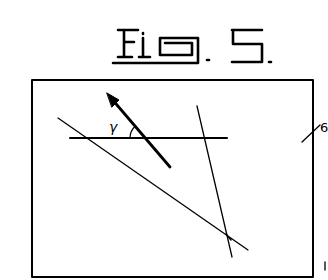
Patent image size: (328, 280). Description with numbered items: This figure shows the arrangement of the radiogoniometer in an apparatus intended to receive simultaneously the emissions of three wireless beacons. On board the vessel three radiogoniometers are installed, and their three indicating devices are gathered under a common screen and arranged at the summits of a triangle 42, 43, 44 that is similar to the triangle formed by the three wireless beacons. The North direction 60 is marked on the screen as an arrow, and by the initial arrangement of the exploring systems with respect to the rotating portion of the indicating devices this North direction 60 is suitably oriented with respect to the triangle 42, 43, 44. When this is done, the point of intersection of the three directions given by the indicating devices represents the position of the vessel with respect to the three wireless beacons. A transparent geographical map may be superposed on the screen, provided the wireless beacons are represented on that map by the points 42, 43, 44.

The summit of triangle 42 is at (239, 232).
The summit of triangle 43 is at (153, 184).
The summit of triangle 44 is at (214, 181).
The North direction 60 is at (128, 122).